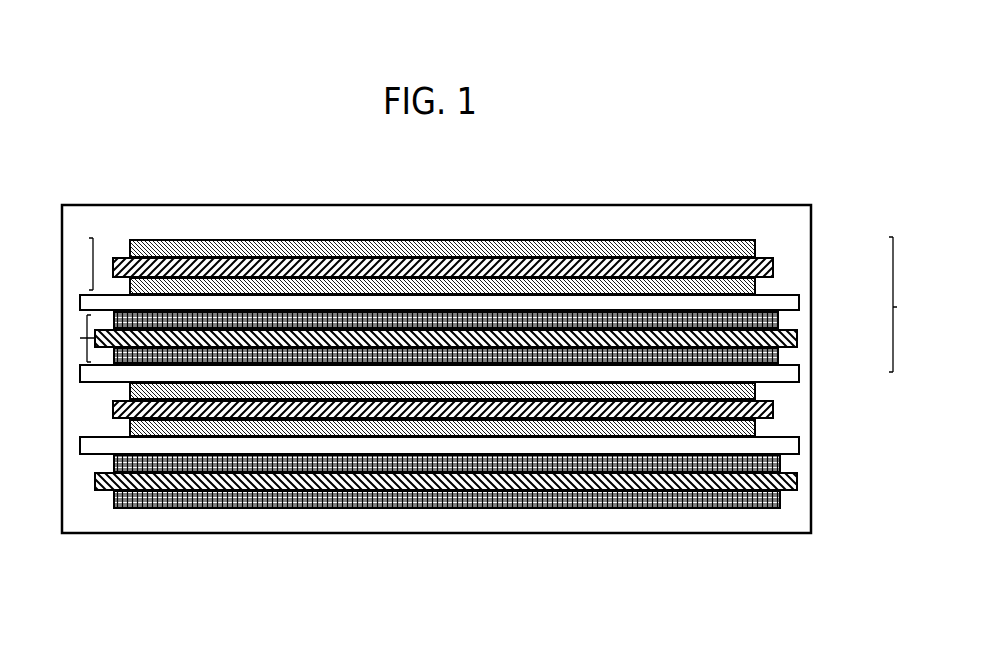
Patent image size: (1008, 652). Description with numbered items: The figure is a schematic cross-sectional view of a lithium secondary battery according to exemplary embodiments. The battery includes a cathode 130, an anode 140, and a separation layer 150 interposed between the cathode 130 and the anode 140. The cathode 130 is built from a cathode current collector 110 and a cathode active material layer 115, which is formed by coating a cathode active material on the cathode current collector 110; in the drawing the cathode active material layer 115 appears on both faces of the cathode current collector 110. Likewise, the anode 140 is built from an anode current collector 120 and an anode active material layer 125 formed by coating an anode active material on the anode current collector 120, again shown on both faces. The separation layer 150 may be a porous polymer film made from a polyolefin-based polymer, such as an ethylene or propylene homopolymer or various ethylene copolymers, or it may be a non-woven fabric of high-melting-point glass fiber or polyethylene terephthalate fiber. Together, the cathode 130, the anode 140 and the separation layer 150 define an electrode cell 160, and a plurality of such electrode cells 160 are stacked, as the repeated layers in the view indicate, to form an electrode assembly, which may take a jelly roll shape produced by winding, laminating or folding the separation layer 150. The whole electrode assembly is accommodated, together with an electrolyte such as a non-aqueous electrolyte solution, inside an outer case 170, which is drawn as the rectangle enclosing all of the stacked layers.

The cathode current collector 110 is at (773, 268).
The cathode active material layer 115 is at (755, 247).
The anode current collector 120 is at (797, 338).
The anode active material layer 125 is at (778, 322).
The cathode 130 is at (86, 256).
The anode 140 is at (79, 350).
The separation layer 150 is at (80, 302).
The electrode cell 160 is at (905, 304).
The outer case 170 is at (193, 533).